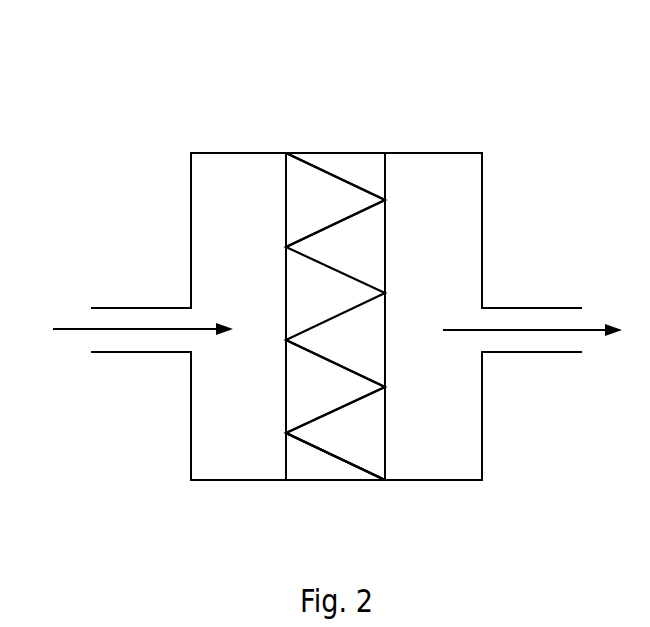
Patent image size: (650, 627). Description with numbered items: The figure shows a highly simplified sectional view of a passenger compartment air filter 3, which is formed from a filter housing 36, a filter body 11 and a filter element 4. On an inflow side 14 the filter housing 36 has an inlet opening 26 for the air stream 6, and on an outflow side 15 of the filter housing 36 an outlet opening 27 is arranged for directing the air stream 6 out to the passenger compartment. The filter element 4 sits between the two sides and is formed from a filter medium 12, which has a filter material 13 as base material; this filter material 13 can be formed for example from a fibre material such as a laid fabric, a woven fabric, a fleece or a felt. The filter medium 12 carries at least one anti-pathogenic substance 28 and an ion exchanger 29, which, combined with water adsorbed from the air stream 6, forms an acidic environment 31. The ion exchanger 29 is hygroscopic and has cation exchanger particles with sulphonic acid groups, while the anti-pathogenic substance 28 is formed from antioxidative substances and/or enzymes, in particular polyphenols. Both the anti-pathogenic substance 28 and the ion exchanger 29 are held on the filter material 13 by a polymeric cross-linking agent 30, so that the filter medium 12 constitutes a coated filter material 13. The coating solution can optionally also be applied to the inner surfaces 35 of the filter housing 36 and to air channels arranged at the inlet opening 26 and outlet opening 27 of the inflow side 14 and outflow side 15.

The air filter 3 is at (163, 121).
The filter element 4 is at (327, 142).
The air stream 6 is at (70, 328).
The filter body 11 is at (387, 172).
The filter medium 12 is at (316, 192).
The filter material 13 is at (357, 248).
The inflow side 14 is at (68, 440).
The outflow side 15 is at (568, 440).
The inlet opening 26 is at (119, 320).
The outlet opening 27 is at (553, 318).
The anti-pathogenic substance 28 is at (323, 370).
The ion exchanger 29 is at (316, 403).
The polymeric cross-linking agent 30 is at (311, 460).
The acidic environment 31 is at (357, 437).
The inner surfaces 35 is at (230, 156).
The filter housing 36 is at (483, 205).